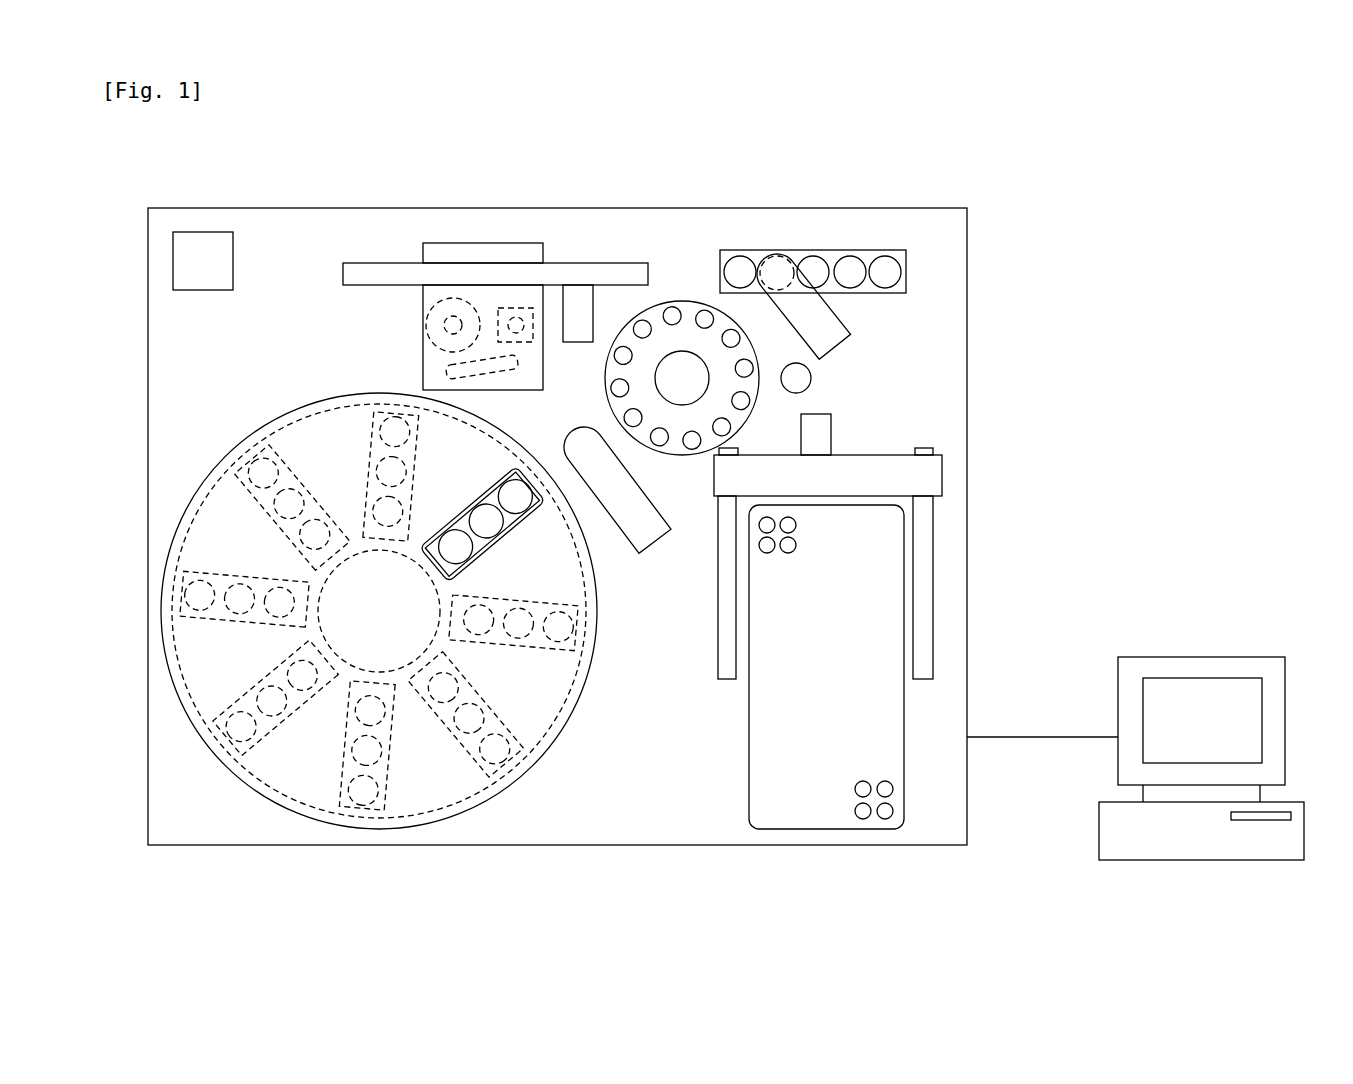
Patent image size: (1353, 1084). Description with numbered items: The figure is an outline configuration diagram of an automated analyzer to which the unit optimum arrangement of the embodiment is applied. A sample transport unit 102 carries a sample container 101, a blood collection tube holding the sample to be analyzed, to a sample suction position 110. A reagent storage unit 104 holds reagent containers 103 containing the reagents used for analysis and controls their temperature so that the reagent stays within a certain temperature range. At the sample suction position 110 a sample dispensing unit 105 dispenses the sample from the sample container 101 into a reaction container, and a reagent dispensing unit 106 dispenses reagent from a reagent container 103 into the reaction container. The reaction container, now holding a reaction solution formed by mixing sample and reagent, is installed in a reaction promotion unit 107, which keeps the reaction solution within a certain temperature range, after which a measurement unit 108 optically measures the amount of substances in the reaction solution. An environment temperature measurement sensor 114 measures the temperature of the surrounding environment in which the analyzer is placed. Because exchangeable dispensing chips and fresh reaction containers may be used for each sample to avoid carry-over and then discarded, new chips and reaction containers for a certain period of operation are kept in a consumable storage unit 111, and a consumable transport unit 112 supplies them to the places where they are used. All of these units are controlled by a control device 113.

The sample container 101 is at (825, 257).
The sample transport unit 102 is at (873, 250).
The reagent container 103 is at (378, 760).
The reagent storage unit 104 is at (341, 826).
The sample dispensing unit 105 is at (823, 322).
The reagent dispensing unit 106 is at (605, 476).
The reaction promotion unit 107 is at (698, 332).
The measurement unit 108 is at (452, 253).
The sample suction position 110 is at (773, 268).
The consumable storage unit 111 is at (894, 741).
The consumable transport unit 112 is at (894, 477).
The control device 113 is at (1213, 860).
The environment temperature measurement sensor 114 is at (198, 265).